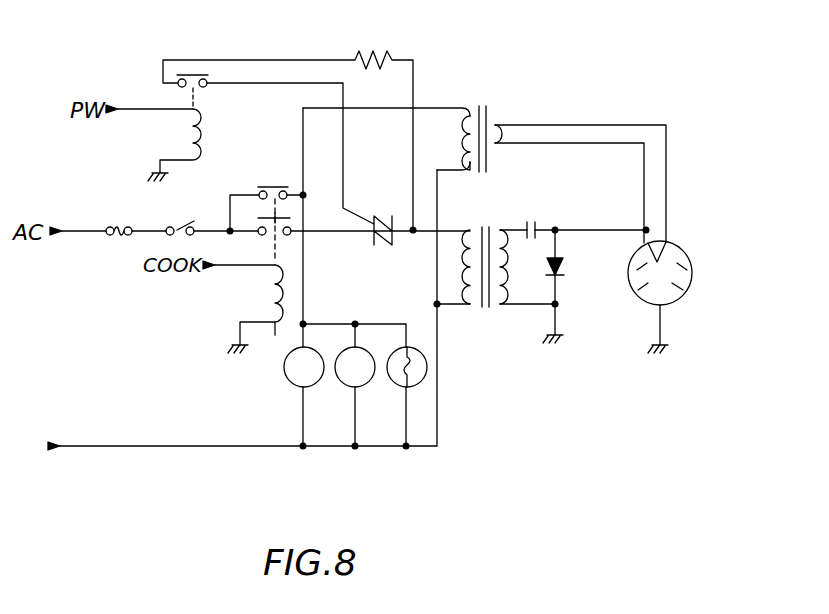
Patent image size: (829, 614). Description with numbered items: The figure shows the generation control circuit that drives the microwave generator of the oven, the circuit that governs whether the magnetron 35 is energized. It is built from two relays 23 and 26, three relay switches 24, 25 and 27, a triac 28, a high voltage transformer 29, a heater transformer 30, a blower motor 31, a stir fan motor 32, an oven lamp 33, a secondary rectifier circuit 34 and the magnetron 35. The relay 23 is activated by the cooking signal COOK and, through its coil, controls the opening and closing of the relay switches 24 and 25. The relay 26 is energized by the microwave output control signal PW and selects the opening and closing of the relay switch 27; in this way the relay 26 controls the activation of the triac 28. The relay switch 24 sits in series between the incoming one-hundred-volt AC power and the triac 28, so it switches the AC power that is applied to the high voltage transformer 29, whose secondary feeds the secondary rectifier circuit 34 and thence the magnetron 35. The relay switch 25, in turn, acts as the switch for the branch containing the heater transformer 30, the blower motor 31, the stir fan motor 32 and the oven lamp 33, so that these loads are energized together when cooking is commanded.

The relay 23 is at (287, 298).
The relay switch 24 is at (292, 213).
The relay switch 25 is at (268, 183).
The relay 26 is at (205, 143).
The relay switch 27 is at (197, 68).
The triac 28 is at (382, 242).
The high voltage transformer 29 is at (488, 318).
The heater transformer 30 is at (478, 103).
The blower motor 31 is at (291, 387).
The stir fan motor 32 is at (344, 387).
The oven lamp 33 is at (397, 387).
The secondary rectifier circuit 34 is at (537, 248).
The magnetron 35 is at (675, 254).